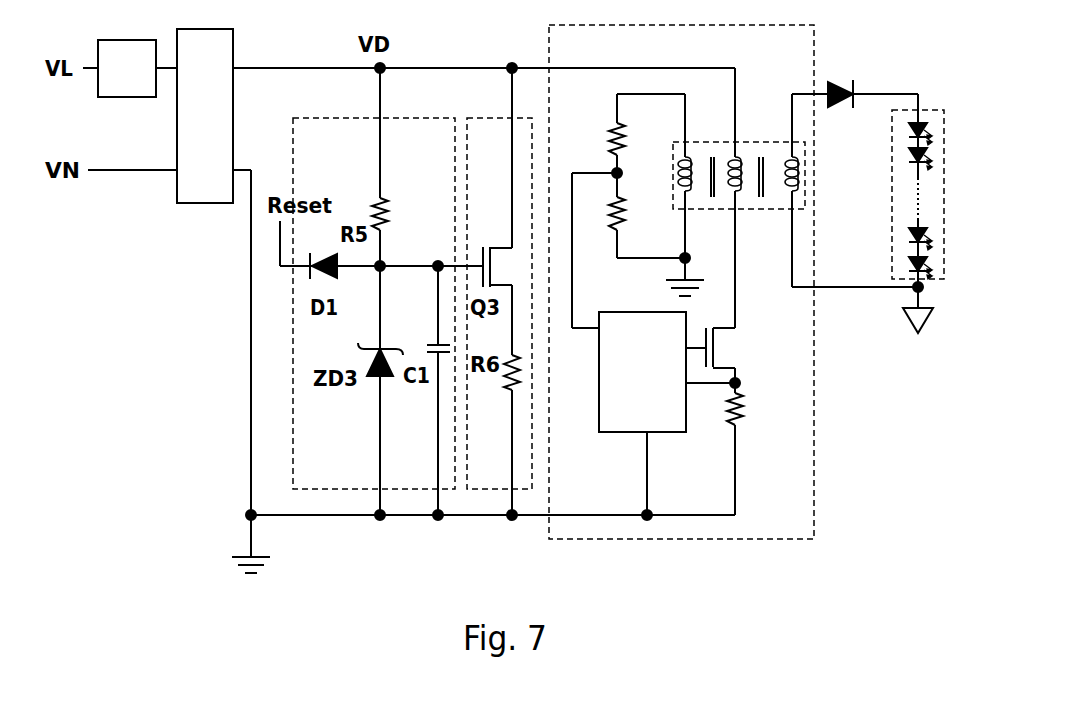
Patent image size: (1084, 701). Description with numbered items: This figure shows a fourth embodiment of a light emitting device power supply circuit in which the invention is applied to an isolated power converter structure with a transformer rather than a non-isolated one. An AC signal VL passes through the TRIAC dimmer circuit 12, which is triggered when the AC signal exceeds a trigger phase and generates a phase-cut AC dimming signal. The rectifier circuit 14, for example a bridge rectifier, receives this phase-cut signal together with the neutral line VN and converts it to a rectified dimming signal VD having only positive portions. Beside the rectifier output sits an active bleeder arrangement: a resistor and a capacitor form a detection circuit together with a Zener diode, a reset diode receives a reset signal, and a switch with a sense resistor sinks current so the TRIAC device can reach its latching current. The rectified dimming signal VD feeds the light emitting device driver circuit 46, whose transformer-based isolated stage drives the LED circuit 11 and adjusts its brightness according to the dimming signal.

The TRIAC dimmer circuit 12 is at (138, 80).
The rectifier circuit 14 is at (219, 131).
The light emitting device driver circuit 46 is at (798, 532).
The LED circuit 11 is at (933, 108).